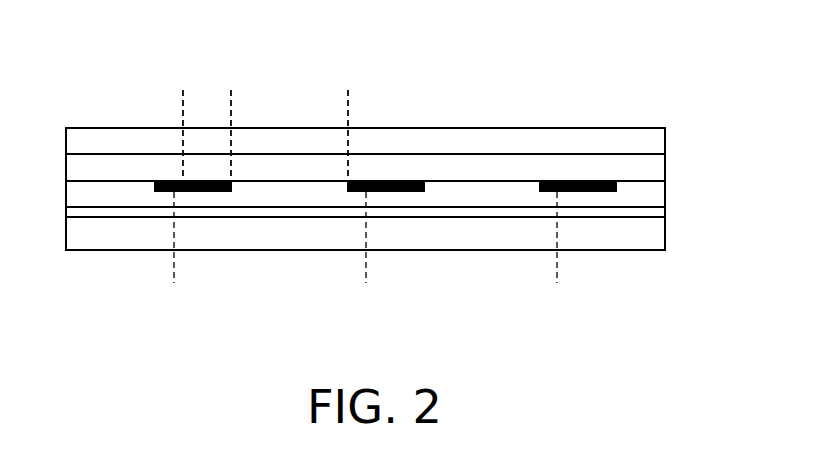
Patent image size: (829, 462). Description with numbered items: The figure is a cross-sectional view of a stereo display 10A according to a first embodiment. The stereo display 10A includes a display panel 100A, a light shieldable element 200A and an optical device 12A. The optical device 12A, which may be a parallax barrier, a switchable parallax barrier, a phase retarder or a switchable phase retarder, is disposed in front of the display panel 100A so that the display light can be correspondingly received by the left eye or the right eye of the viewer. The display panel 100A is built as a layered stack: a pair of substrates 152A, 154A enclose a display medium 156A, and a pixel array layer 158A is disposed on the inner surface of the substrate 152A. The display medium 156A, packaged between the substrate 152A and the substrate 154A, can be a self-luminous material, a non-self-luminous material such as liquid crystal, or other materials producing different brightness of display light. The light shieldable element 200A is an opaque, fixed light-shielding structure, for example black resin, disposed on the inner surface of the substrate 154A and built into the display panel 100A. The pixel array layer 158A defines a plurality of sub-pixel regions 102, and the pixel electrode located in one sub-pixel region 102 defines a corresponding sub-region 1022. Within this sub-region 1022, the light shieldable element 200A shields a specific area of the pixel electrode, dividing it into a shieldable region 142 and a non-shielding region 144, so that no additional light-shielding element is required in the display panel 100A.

The stereo display 10A is at (687, 347).
The display panel 100A is at (758, 120).
The optical device 12A is at (648, 140).
The substrate 154A is at (650, 165).
The display medium 156A is at (655, 195).
The pixel array layer 158A is at (652, 212).
The substrate 152A is at (648, 233).
The light shieldable element 200A is at (566, 181).
The sub-pixel region 102 is at (557, 267).
The sub-region 1022 is at (302, 60).
The shieldable region 142 is at (231, 105).
The non-shielding region 144 is at (348, 105).